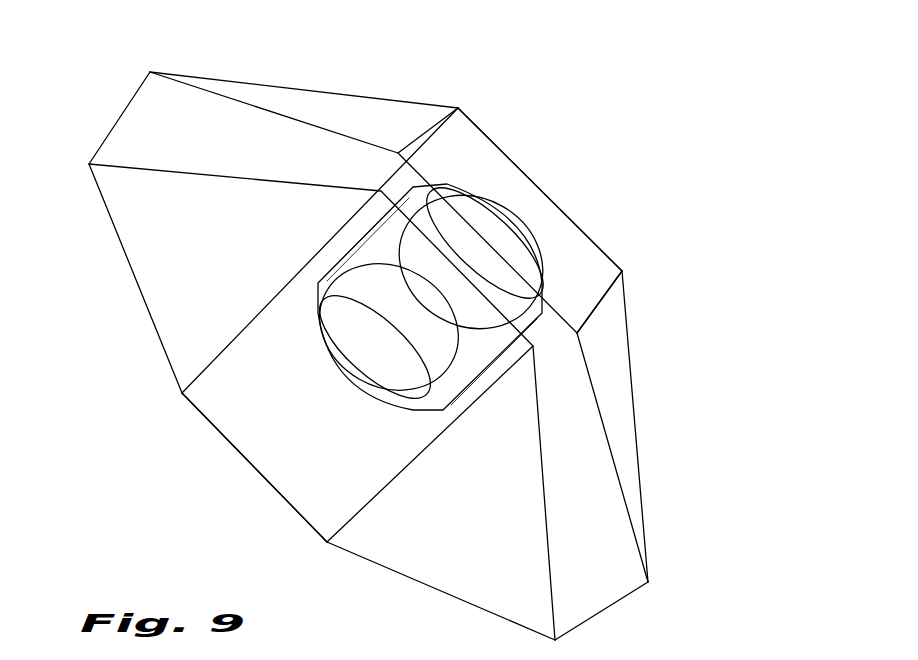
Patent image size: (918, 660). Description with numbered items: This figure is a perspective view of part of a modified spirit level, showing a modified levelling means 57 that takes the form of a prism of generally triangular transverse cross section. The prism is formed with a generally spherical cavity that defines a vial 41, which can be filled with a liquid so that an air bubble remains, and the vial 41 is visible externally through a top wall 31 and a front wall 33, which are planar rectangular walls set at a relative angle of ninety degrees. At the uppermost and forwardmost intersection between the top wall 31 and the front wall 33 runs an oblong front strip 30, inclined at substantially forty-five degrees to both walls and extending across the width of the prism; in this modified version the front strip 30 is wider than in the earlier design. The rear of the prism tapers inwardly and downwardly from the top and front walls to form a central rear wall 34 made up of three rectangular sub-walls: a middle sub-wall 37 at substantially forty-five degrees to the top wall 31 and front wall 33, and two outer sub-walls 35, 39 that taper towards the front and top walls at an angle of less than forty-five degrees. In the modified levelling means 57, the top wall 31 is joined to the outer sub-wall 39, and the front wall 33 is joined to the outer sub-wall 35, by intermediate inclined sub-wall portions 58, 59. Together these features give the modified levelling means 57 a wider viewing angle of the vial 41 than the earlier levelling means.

The front strip 30 is at (552, 197).
The top wall 31 is at (390, 98).
The front wall 33 is at (632, 412).
The central rear wall 34 is at (200, 443).
The outer sub-wall 35 is at (407, 582).
The middle sub-wall 37 is at (267, 487).
The outer sub-wall 39 is at (132, 278).
The vial 41 is at (378, 400).
The modified levelling means 57 is at (542, 125).
The intermediate inclined sub-wall portion 58 is at (125, 110).
The intermediate inclined sub-wall portion 59 is at (605, 607).